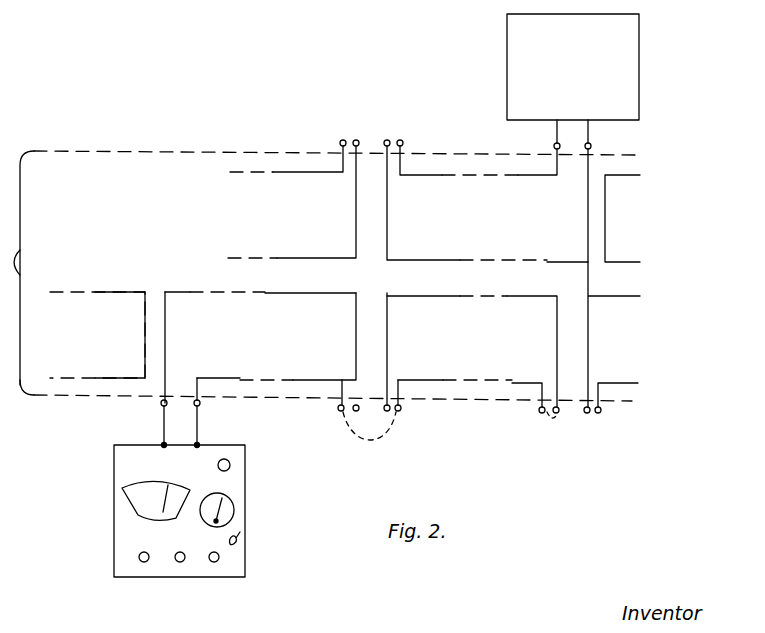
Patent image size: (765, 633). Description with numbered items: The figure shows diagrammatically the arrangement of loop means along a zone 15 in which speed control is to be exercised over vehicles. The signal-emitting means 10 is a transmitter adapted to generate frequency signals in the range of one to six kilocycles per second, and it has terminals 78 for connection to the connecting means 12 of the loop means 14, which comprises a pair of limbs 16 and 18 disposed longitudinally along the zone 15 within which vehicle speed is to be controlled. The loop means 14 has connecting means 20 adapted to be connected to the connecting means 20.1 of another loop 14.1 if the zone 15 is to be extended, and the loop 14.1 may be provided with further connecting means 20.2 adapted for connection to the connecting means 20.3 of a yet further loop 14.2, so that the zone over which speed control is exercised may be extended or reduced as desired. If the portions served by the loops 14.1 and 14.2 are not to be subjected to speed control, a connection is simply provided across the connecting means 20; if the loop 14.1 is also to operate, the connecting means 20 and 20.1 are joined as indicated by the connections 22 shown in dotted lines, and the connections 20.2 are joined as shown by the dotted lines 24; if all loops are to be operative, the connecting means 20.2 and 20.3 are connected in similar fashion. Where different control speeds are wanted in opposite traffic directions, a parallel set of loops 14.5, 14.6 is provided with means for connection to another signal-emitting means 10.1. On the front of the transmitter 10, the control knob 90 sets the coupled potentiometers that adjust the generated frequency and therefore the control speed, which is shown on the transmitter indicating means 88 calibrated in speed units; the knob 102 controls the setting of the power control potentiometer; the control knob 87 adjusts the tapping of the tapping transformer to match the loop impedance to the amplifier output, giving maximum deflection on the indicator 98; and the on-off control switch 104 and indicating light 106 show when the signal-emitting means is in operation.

The signal-emitting means 10 is at (111, 513).
The another signal-emitting means 10.1 is at (514, 77).
The connecting means 12 is at (201, 402).
The loop means 14 is at (308, 378).
The another loop 14.1 is at (482, 384).
The yet further loop 14.2 is at (616, 376).
The parallel loop 14.5 is at (423, 173).
The parallel loop 14.6 is at (289, 170).
The zone 15 is at (29, 247).
The limb 16 is at (233, 378).
The limb 18 is at (297, 296).
The connecting means 20 is at (338, 412).
The connecting means 20.1 is at (401, 411).
The connecting means 20.2 is at (557, 414).
The connecting means 20.3 is at (598, 414).
The connections 22 is at (358, 440).
The dotted lines 24 is at (541, 415).
The terminals 78 is at (160, 444).
The control knob 87 is at (180, 564).
The transmitter indicating means 88 is at (121, 496).
The control knob 90 is at (143, 564).
The indicator 98 is at (233, 504).
The knob 102 is at (213, 564).
The on-off control switch 104 is at (236, 546).
The indicating light 106 is at (231, 465).